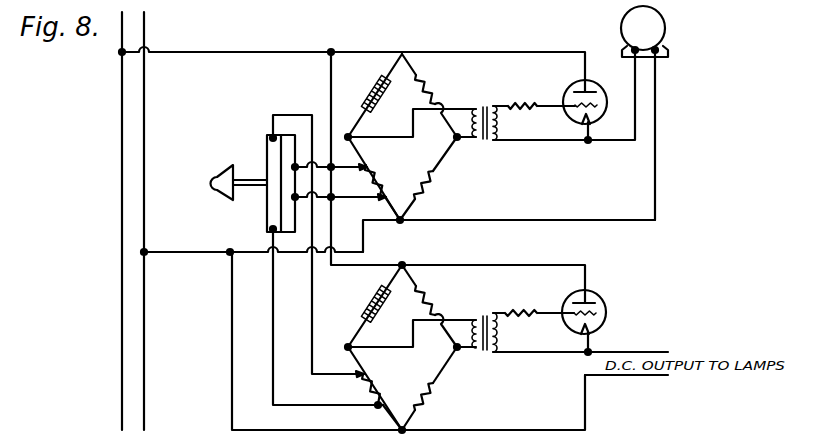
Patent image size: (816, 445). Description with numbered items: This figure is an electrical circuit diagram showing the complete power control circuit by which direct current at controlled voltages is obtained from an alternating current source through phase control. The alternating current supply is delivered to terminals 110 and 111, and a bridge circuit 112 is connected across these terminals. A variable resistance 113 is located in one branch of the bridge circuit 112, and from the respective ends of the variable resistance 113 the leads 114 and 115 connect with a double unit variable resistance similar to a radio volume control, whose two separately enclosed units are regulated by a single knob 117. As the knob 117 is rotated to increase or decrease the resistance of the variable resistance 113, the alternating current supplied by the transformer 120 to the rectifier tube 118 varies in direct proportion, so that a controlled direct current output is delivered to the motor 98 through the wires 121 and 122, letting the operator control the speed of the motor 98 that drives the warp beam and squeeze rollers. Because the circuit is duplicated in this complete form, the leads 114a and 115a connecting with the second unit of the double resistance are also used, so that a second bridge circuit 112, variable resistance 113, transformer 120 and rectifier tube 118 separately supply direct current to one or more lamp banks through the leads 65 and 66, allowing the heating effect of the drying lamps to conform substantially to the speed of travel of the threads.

The motor 98 is at (667, 33).
The alternating current terminal 110 is at (372, 51).
The alternating current terminal 111 is at (367, 238).
The bridge circuit 112 is at (432, 181).
The variable resistance 113 is at (376, 175).
The lead 114 is at (322, 165).
The lead 114a is at (271, 136).
The lead 115 is at (350, 199).
The lead 115a is at (271, 228).
The knob 117 is at (215, 174).
The rectifier tube 118 is at (576, 83).
The transformer 120 is at (488, 142).
The wire 121 is at (610, 143).
The wire 122 is at (657, 128).
The lead 65 is at (649, 351).
The lead 66 is at (652, 377).